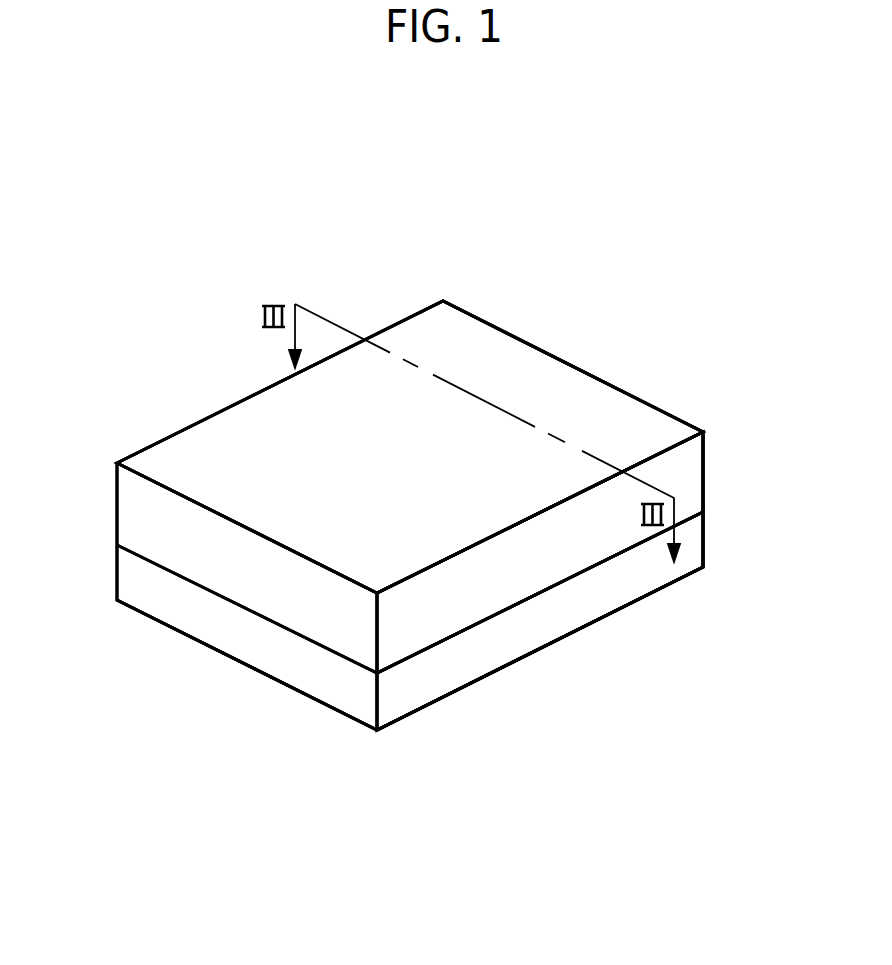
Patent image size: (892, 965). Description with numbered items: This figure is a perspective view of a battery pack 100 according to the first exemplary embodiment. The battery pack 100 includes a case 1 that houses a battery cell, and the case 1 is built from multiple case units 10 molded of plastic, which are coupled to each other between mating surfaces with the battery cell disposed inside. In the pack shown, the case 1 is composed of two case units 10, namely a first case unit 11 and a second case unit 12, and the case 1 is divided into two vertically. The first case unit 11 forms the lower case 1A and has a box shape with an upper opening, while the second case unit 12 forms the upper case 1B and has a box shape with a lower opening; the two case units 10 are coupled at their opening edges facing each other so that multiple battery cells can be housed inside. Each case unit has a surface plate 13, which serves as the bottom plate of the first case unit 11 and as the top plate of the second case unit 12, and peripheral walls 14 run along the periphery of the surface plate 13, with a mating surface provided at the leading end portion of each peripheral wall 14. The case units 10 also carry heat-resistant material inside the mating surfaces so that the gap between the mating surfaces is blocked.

The battery pack 100 is at (583, 245).
The case unit 10 is at (373, 554).
The second case unit 12 is at (232, 388).
The first case unit 11 is at (265, 692).
The surface plate 13 is at (443, 465).
The peripheral wall 14 is at (488, 580).
The case 1 is at (788, 447).
The lower case 1A is at (725, 512).
The upper case 1B is at (725, 430).